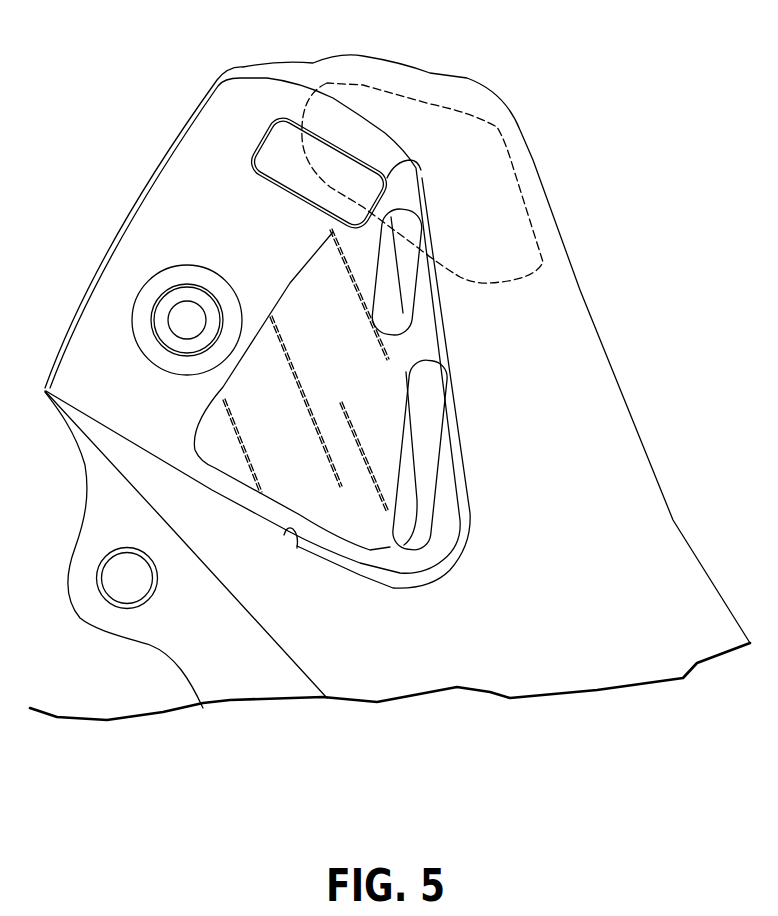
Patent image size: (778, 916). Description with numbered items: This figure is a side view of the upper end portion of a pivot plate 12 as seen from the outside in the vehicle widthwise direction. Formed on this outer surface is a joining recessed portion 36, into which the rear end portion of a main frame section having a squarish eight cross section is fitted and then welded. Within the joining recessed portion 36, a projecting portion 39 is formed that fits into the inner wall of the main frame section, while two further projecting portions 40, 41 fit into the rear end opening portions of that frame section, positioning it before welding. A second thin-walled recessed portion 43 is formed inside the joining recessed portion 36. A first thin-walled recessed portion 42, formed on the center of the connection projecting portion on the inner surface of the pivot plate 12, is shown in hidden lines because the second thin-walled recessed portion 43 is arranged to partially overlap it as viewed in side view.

The pivot plate 12 is at (637, 452).
The joining recessed portion 36 is at (295, 540).
The projecting portion 39 is at (190, 293).
The projecting portion 40 is at (413, 290).
The projecting portion 41 is at (433, 500).
The first thin-walled recessed portion 42 is at (421, 100).
The second thin-walled recessed portion 43 is at (288, 180).